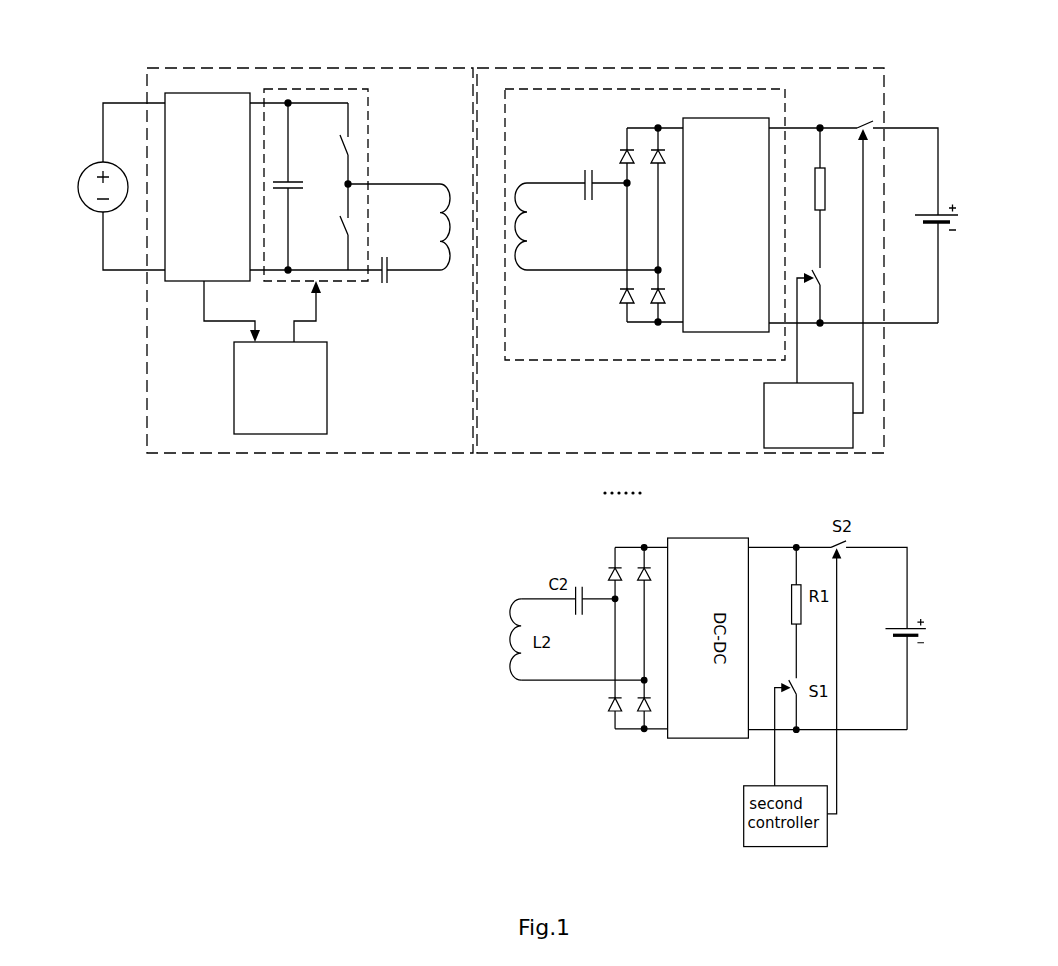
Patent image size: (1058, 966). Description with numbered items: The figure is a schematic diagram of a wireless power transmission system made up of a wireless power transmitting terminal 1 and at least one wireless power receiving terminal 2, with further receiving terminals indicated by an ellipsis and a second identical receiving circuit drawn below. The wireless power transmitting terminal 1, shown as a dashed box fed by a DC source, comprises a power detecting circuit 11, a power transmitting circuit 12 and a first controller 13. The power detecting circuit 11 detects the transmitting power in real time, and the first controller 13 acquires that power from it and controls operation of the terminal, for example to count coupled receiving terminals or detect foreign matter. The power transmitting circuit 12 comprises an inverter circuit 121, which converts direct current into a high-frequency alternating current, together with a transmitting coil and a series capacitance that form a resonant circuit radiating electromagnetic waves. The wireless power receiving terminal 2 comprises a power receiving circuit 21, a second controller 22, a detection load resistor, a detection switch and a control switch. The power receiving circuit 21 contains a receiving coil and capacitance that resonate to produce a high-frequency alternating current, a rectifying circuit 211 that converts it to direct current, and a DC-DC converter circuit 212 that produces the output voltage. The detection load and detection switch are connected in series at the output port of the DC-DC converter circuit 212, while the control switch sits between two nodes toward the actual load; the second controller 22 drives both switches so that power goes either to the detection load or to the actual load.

The wireless power transmitting terminal 1 is at (346, 68).
The power detecting circuit 11 is at (165, 250).
The power transmitting circuit 12 is at (350, 231).
The inverter circuit 121 is at (368, 128).
The first controller 13 is at (234, 356).
The wireless power receiving terminal 2 is at (707, 68).
The power receiving circuit 21 is at (570, 88).
The rectifying circuit 211 is at (634, 121).
The DC-DC converter circuit 212 is at (743, 118).
The second controller 22 is at (764, 387).